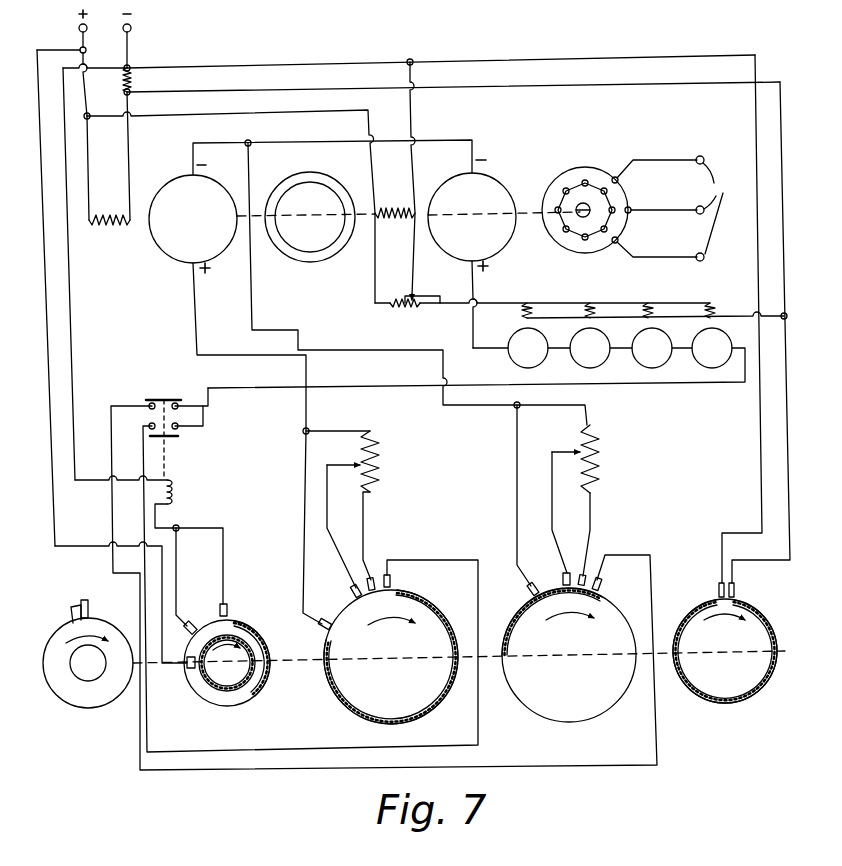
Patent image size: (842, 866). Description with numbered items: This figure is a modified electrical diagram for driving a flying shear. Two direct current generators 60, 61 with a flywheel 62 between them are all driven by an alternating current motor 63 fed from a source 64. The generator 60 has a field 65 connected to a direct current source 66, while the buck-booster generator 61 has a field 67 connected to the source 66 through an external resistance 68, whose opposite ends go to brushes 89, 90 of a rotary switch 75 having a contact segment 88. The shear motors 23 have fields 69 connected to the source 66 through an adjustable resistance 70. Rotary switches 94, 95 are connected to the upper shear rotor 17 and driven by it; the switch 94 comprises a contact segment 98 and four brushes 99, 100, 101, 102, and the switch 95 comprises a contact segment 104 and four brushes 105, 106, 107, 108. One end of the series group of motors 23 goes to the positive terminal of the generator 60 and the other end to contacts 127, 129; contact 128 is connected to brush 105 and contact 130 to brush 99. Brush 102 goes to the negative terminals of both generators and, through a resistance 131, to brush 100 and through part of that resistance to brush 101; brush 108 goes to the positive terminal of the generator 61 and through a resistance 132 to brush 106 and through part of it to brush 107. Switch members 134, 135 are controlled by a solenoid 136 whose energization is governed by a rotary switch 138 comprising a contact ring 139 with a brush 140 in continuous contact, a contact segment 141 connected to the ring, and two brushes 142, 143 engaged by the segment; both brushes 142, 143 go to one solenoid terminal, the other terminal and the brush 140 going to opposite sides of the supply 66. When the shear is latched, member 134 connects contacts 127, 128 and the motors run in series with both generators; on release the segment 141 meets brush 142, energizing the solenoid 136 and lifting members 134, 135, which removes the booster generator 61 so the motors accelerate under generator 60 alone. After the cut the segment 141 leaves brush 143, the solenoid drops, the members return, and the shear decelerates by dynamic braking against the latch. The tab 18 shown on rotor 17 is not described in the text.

The upper shear rotor 17 is at (82, 700).
The tab / coupling 18 is at (98, 585).
The shear motors 23 is at (540, 363).
The direct current generator 60 is at (498, 240).
The buck-booster generator 61 is at (168, 250).
The flywheel 62 is at (297, 190).
The alternating current motor 63 is at (588, 168).
The source 64 is at (671, 208).
The field 65 is at (395, 224).
The source of direct current 66 is at (105, 25).
The field 67 is at (109, 231).
The external resistance 68 is at (133, 80).
The fields 69 is at (588, 306).
The adjustable resistance 70 is at (415, 309).
The rotary switch 75 is at (725, 651).
The contact segment 88 is at (768, 680).
The brush 89 is at (735, 590).
The brush 90 is at (718, 590).
The rotary switch 94 is at (391, 657).
The rotary switch 95 is at (569, 655).
The contact segment 98 is at (440, 604).
The brush 99 is at (391, 580).
The brush 100 is at (376, 577).
The brush 101 is at (350, 590).
The brush 102 is at (320, 630).
The contact segment 104 is at (503, 640).
The brush 105 is at (603, 582).
The brush 106 is at (584, 574).
The brush 107 is at (562, 575).
The brush 108 is at (528, 594).
The contact 127 is at (192, 390).
The contact 128 is at (149, 404).
The contact 129 is at (178, 428).
The contact 130 is at (149, 425).
The resistance 131 is at (372, 465).
The resistance 132 is at (594, 462).
The switch member 134 is at (164, 396).
The switch member 135 is at (176, 440).
The solenoid 136 is at (185, 492).
The rotary switch 138 is at (241, 675).
The contact ring 139 is at (208, 678).
The brush 140 is at (190, 671).
The contact segment 141 is at (262, 690).
The brush 142 is at (230, 604).
The brush 143 is at (208, 603).